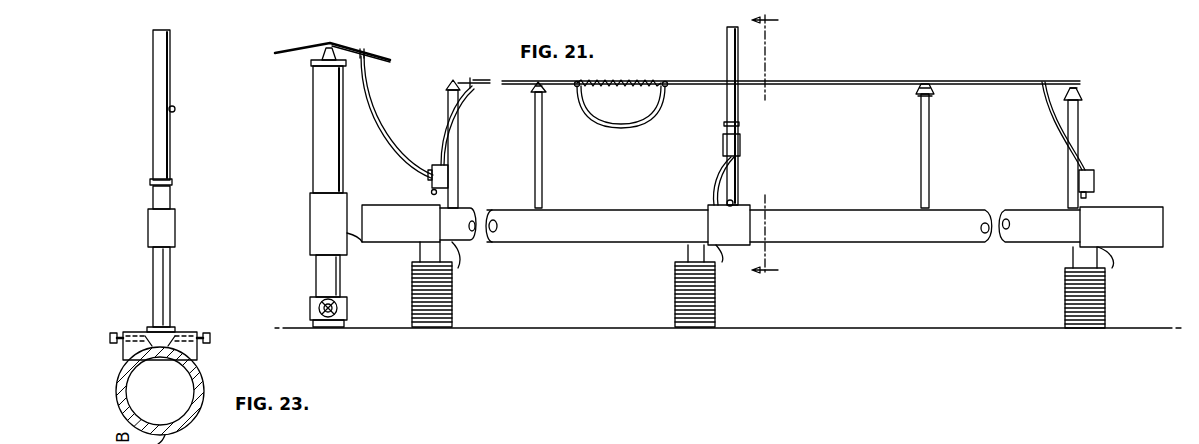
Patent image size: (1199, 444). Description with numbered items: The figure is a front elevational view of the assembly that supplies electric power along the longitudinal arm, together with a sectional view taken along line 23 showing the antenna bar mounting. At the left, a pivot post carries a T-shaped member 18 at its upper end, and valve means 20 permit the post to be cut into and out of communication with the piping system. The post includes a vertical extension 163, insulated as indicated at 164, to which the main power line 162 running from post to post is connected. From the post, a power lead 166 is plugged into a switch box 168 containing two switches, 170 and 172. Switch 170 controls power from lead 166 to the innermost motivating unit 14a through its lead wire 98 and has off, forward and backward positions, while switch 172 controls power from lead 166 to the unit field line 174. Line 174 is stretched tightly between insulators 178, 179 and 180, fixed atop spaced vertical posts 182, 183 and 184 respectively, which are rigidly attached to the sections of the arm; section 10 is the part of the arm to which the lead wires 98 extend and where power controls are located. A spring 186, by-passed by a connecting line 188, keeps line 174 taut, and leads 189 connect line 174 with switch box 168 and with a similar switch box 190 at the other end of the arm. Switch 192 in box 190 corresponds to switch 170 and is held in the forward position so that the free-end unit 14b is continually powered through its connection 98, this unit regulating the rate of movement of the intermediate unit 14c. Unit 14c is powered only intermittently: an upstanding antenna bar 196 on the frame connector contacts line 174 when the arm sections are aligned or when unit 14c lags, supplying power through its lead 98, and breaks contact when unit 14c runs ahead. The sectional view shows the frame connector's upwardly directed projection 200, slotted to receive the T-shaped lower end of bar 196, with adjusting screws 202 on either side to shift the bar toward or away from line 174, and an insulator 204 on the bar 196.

In FIG. 21, the section 10 is at (874, 243).
In FIG. 21, the innermost motivating unit 14a is at (452, 315).
In FIG. 21, the free-end motivating unit 14b is at (1092, 328).
In FIG. 21, the intermediate motivating unit 14c is at (715, 318).
In FIG. 21, the T-shaped member 18 is at (357, 204).
In FIG. 21, the valve means 20 is at (347, 320).
In FIG. 21, the section line 23— 23 is at (782, 149).
In FIG. 23, the lead wire 98 is at (172, 183).
In FIG. 21, the lead wire 98 is at (700, 164).
In FIG. 21, the main power line 162 is at (284, 50).
In FIG. 21, the vertical extension 163 is at (313, 130).
In FIG. 21, the insulation 164 is at (320, 62).
In FIG. 21, the power lead 166 is at (372, 112).
In FIG. 21, the switch box 168 is at (428, 182).
In FIG. 21, the switch 170 is at (431, 194).
In FIG. 21, the switch 172 is at (432, 165).
In FIG. 23, the unit field line 174 is at (175, 108).
In FIG. 21, the unit field line 174 is at (840, 80).
In FIG. 21, the insulator 178 is at (486, 63).
In FIG. 21, the insulator 179 is at (916, 95).
In FIG. 21, the insulator 180 is at (1082, 100).
In FIG. 21, the vertical post 182 is at (542, 147).
In FIG. 21, the vertical post 183 is at (921, 162).
In FIG. 21, the vertical post 184 is at (1068, 175).
In FIG. 21, the spring 186 is at (640, 81).
In FIG. 21, the connecting line 188 is at (665, 108).
In FIG. 21, the leads 189 is at (478, 100).
In FIG. 21, the switch box 190 is at (1095, 182).
In FIG. 21, the switch 192 is at (1086, 196).
In FIG. 23, the antenna bar 196 is at (170, 70).
In FIG. 21, the antenna bar 196 is at (727, 45).
In FIG. 23, the projection 200 is at (197, 350).
In FIG. 23, the adjusting screws 202 is at (113, 332).
In FIG. 23, the insulator 204 is at (177, 228).
In FIG. 21, the insulator 204 is at (742, 148).